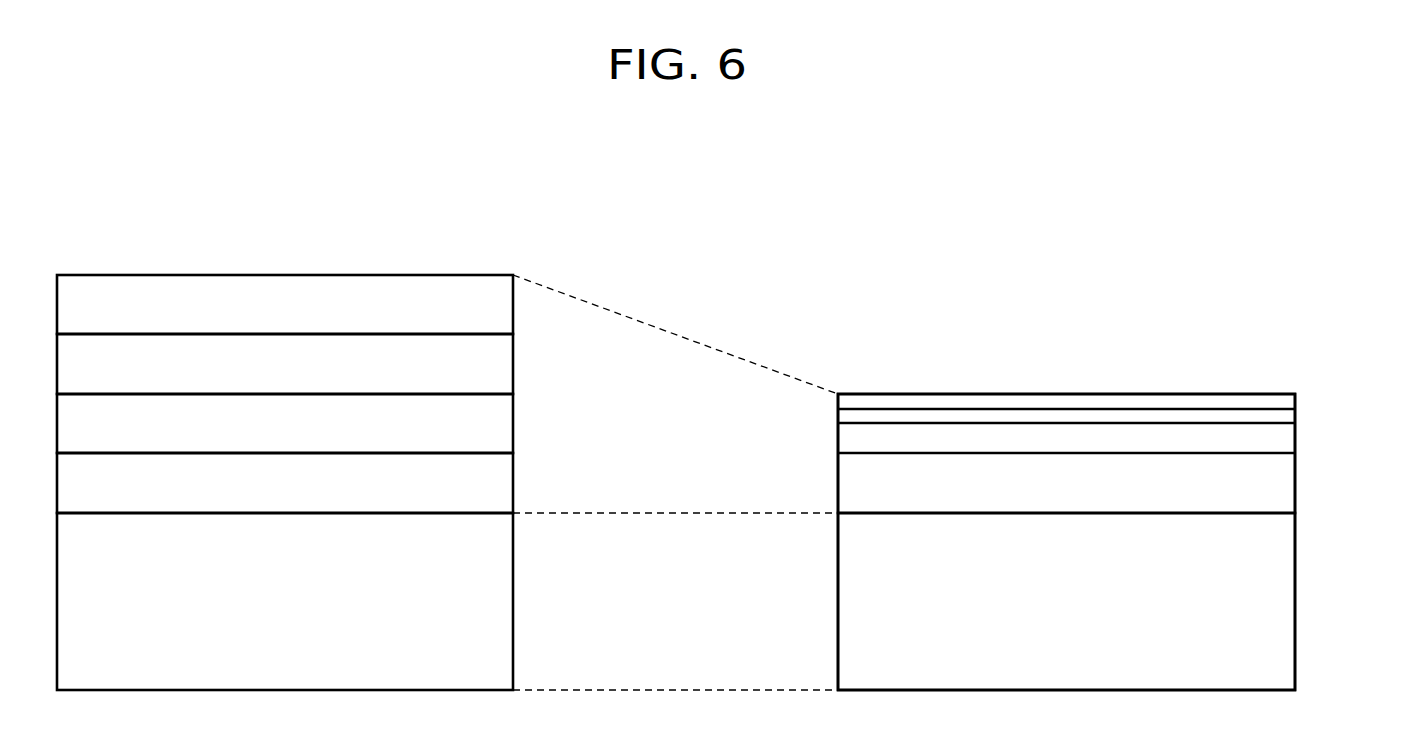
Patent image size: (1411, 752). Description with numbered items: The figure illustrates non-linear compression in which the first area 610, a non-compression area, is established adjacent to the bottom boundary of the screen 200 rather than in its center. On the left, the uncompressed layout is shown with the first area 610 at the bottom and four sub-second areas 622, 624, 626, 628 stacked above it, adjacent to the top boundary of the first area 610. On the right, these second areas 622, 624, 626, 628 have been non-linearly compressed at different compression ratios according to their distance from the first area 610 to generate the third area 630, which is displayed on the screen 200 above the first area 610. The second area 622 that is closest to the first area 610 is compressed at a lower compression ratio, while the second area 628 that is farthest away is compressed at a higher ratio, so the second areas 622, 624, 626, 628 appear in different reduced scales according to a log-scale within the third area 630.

The screen 200 is at (1122, 362).
The first area 610 is at (310, 612).
The second area 622 is at (310, 500).
The second area 624 is at (310, 441).
The second area 626 is at (310, 381).
The second area 628 is at (310, 322).
The third area 630 is at (1300, 394).